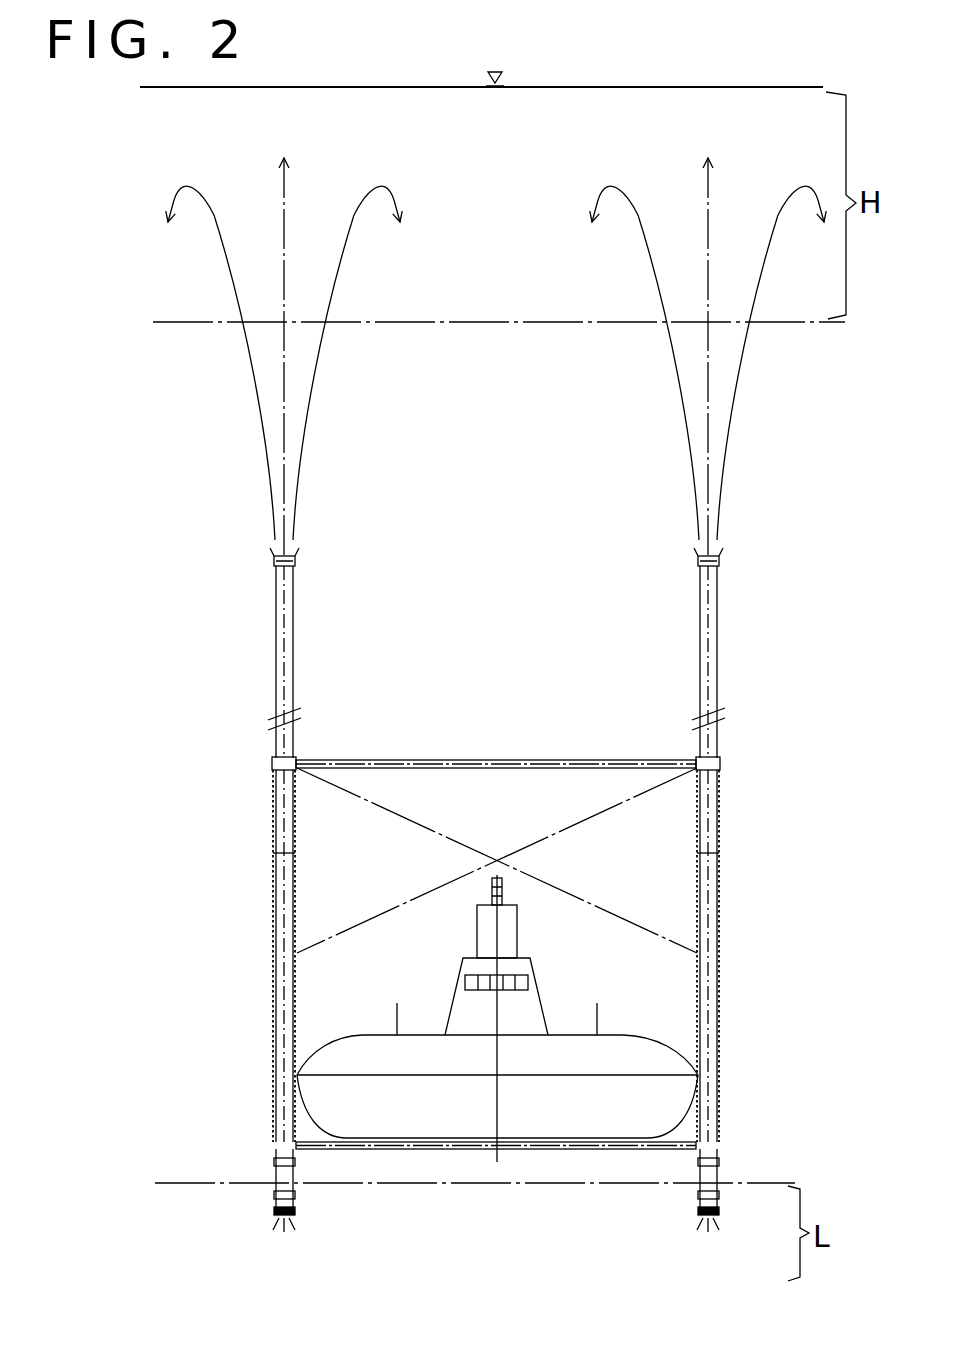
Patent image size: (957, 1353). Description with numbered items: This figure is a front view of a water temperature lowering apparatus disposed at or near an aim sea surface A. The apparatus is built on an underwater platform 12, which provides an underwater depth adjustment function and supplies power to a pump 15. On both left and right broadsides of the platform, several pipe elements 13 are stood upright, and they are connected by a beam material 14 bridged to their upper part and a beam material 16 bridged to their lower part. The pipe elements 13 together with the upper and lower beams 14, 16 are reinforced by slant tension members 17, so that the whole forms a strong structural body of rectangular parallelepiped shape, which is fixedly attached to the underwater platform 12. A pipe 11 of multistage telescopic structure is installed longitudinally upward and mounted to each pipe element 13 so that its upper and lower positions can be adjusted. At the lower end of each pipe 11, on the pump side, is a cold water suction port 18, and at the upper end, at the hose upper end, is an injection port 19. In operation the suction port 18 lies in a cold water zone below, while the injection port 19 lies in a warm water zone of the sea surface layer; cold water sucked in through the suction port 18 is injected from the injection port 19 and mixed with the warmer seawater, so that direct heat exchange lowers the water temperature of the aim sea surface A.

The pipe 11 is at (280, 677).
The underwater platform 12 is at (683, 1049).
The pipe element 13 is at (273, 915).
The upper beam material 14 is at (507, 760).
The pump 15 is at (298, 1178).
The lower beam material 16 is at (520, 1150).
The slant tension member 17 is at (518, 853).
The cold water suction port 18 is at (276, 1217).
The injection port 19 is at (283, 552).
The aim sea surface A is at (413, 85).